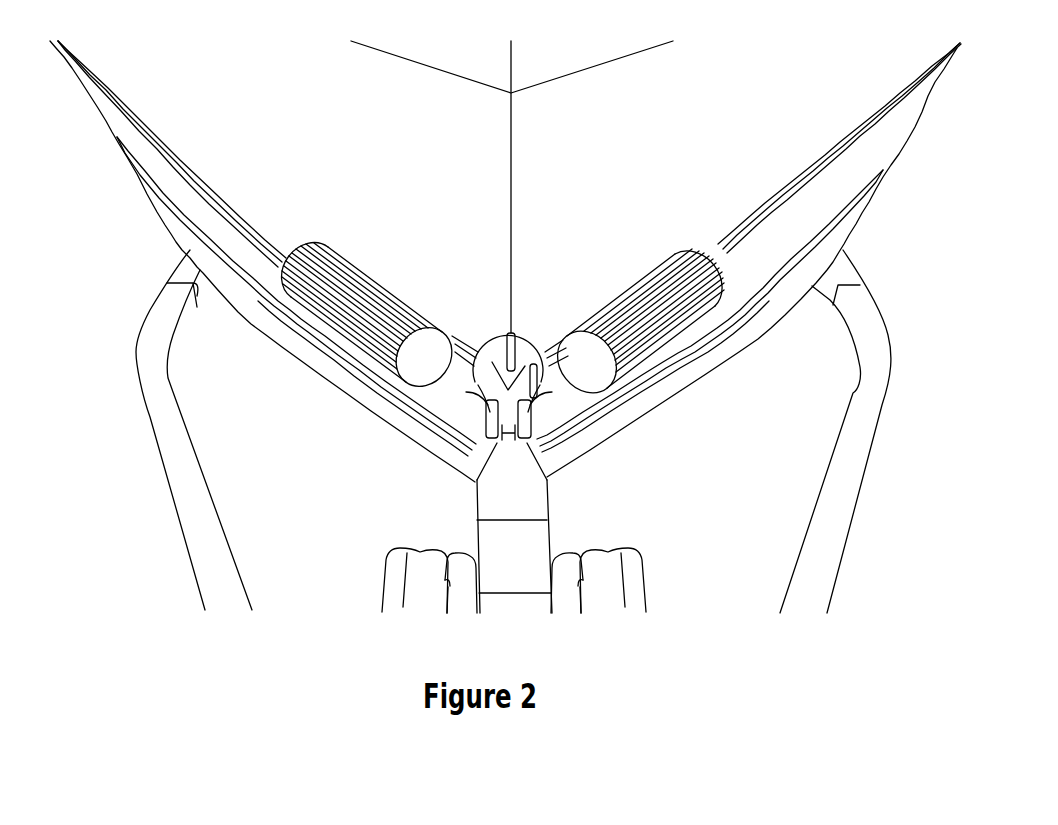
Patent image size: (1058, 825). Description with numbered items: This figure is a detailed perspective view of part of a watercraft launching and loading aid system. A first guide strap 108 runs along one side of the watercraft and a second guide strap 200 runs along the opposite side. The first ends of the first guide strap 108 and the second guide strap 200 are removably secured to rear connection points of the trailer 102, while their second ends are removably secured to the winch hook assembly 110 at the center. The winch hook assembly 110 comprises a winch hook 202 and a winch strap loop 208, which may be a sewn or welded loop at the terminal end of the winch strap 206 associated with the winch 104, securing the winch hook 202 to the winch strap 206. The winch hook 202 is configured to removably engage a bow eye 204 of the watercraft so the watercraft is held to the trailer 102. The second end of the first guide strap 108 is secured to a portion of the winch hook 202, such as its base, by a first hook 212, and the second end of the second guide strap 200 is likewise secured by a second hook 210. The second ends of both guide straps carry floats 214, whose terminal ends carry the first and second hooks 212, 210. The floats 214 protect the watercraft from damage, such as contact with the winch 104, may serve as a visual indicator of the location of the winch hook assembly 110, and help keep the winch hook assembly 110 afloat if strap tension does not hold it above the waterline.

The trailer 102 is at (137, 340).
The winch 104 is at (384, 608).
The first guide strap 108 is at (750, 225).
The winch hook assembly 110 is at (468, 450).
The second guide strap 200 is at (216, 196).
The winch hook 202 is at (487, 347).
The bow eye 204 is at (508, 349).
The winch strap 206 is at (538, 504).
The winch strap loop 208 is at (535, 413).
The second hook 210 is at (490, 404).
The first hook 212 is at (535, 410).
The floats 214 is at (593, 357).